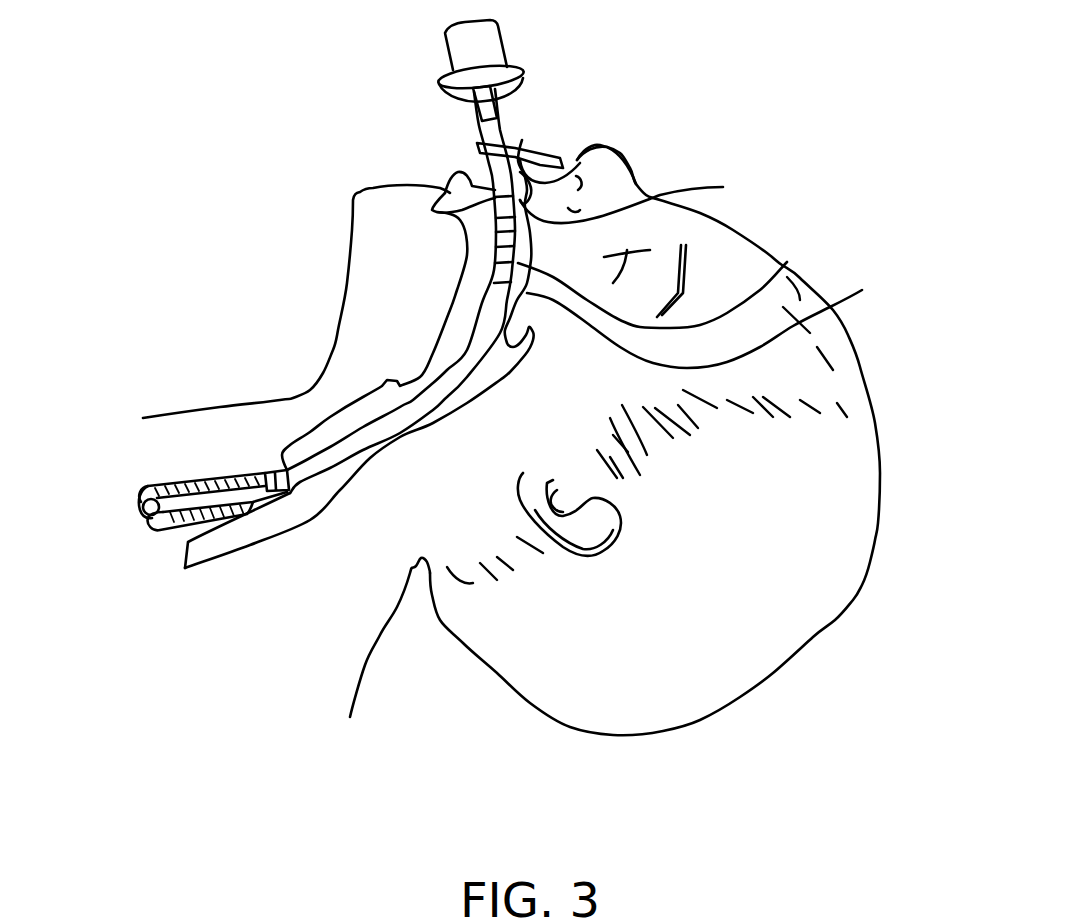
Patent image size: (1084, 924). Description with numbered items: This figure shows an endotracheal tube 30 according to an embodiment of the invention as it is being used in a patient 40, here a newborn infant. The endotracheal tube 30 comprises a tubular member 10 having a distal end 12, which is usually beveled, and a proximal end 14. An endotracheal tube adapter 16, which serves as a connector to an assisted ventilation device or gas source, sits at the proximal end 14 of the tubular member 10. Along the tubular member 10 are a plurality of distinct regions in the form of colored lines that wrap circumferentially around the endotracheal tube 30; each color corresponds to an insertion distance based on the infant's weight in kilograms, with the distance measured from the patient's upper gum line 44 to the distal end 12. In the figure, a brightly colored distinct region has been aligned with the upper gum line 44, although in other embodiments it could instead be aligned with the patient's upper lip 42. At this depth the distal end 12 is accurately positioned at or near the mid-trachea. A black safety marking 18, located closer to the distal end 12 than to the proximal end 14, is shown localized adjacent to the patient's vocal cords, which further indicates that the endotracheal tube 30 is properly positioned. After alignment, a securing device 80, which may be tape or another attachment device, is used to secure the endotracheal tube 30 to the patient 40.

The tubular member 10 is at (460, 372).
The distal end 12 is at (143, 506).
The proximal end 14 is at (472, 108).
The endotracheal tube adapter 16 is at (500, 35).
The safety marking 18 is at (270, 471).
The endotracheal tube 30 is at (327, 453).
The patient 40 is at (347, 283).
The upper lip 42 is at (615, 150).
The upper gum line 44 is at (643, 196).
The securing device 80 is at (532, 150).